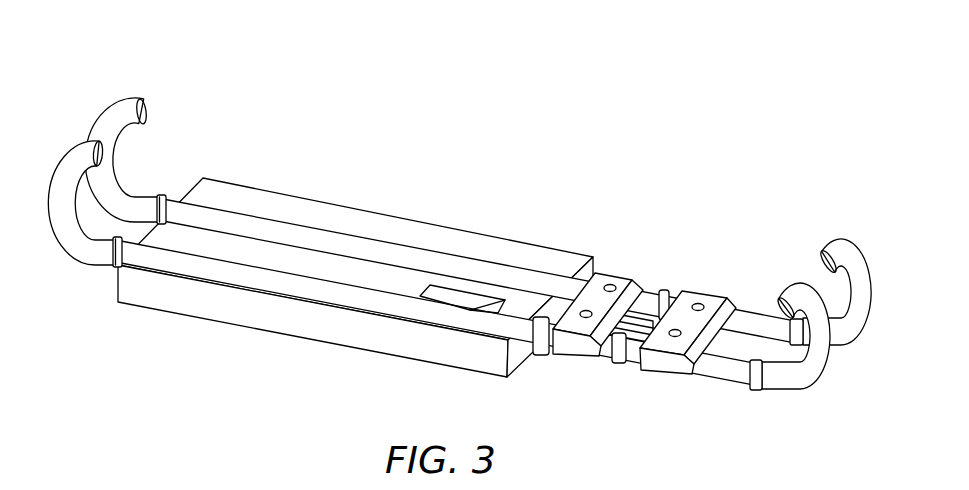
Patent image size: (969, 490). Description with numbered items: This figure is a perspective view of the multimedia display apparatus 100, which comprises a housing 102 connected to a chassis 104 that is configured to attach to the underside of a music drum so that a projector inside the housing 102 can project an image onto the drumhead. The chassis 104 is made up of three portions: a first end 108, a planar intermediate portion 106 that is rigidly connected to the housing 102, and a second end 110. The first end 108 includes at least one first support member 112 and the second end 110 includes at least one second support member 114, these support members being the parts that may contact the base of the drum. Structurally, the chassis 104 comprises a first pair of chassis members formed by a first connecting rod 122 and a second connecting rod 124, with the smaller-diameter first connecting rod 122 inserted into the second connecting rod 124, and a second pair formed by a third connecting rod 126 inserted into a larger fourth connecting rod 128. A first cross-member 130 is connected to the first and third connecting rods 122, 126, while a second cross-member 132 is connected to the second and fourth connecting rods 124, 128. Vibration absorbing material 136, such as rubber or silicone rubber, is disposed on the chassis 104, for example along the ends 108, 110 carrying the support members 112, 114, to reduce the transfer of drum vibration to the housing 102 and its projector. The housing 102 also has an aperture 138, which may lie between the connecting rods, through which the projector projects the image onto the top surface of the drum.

The multimedia display apparatus 100 is at (462, 231).
The housing 102 is at (355, 265).
The chassis 104 is at (817, 287).
The planar intermediate portion 106 is at (314, 228).
The first end 108 is at (125, 50).
The second end 110 is at (841, 262).
The first support member 112 is at (102, 142).
The second support member 114 is at (821, 303).
The first connecting rod 122 is at (718, 363).
The second connecting rod 124 is at (621, 357).
The third connecting rod 126 is at (752, 323).
The fourth connecting rod 128 is at (667, 297).
The first cross-member 130 is at (700, 300).
The second cross-member 132 is at (630, 280).
The vibration absorbing material 136 is at (428, 322).
The aperture 138 is at (437, 297).